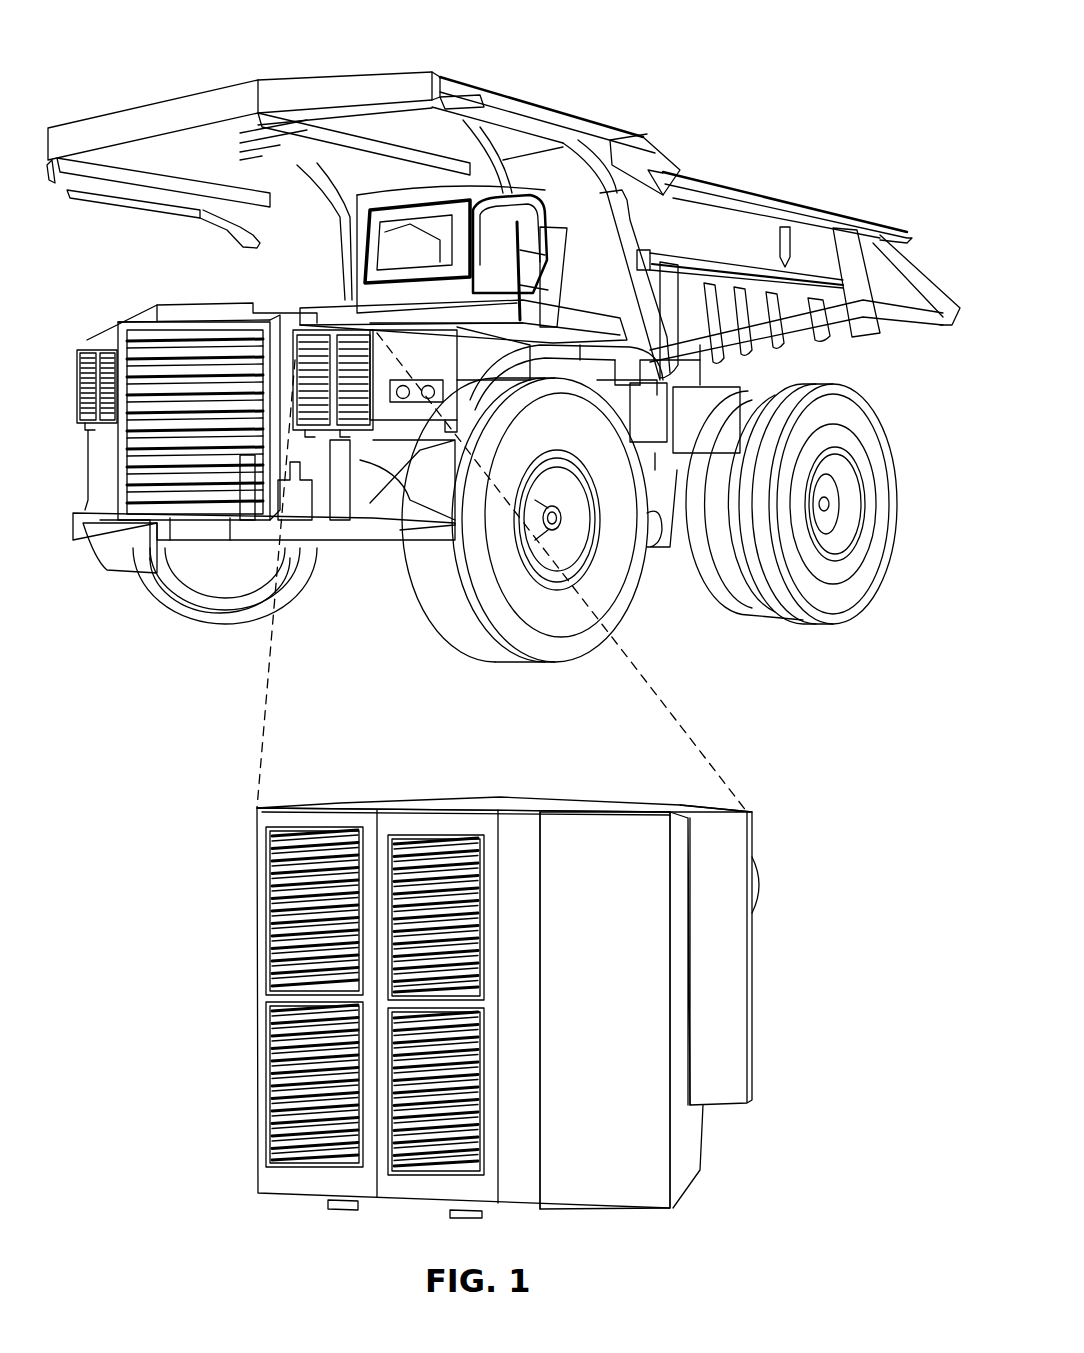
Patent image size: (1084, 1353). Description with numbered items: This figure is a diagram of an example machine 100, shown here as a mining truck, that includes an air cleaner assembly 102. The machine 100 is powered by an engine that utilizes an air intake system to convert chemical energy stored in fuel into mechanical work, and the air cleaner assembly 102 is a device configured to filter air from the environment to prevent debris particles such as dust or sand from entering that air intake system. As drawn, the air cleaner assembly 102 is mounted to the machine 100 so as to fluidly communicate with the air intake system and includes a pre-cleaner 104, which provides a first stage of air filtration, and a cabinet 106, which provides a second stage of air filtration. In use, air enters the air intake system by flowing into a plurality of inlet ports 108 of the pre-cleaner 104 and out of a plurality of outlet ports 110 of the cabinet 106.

The machine 100 is at (146, 31).
The air cleaner assembly 102 is at (78, 350).
The pre-cleaner 104 is at (462, 808).
The cabinet 106 is at (632, 1006).
The inlet ports 108 is at (277, 1066).
The outlet ports 110 is at (762, 885).